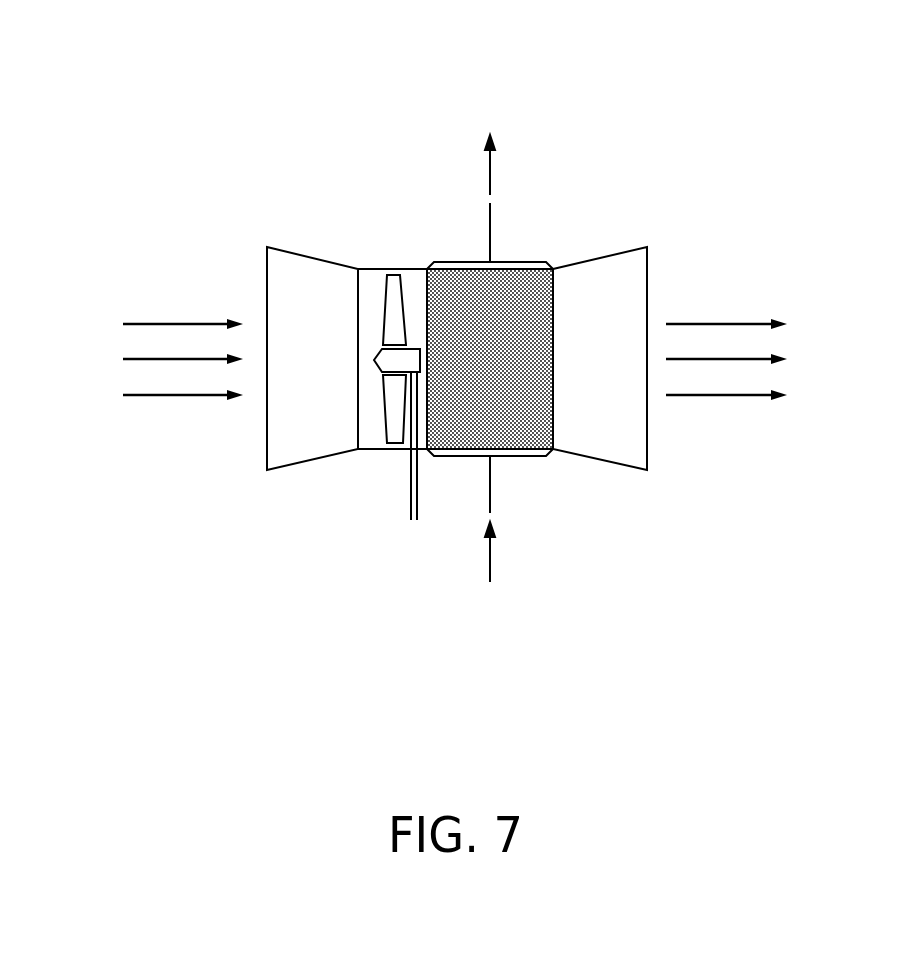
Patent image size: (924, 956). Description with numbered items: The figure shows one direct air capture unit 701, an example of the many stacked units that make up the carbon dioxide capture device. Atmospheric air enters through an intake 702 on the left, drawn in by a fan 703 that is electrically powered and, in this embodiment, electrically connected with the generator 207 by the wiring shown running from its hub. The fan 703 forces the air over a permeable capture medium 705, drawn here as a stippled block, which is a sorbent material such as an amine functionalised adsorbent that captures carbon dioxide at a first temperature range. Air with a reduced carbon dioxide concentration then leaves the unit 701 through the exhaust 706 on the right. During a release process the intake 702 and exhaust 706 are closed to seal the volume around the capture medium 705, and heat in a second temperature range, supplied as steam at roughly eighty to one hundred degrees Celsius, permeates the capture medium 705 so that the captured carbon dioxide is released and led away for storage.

The direct air capture unit 701 is at (470, 316).
The intake 702 is at (282, 275).
The fan 703 is at (402, 427).
The capture medium 705 is at (515, 430).
The exhaust 706 is at (635, 273).
The generator 207 is at (410, 508).